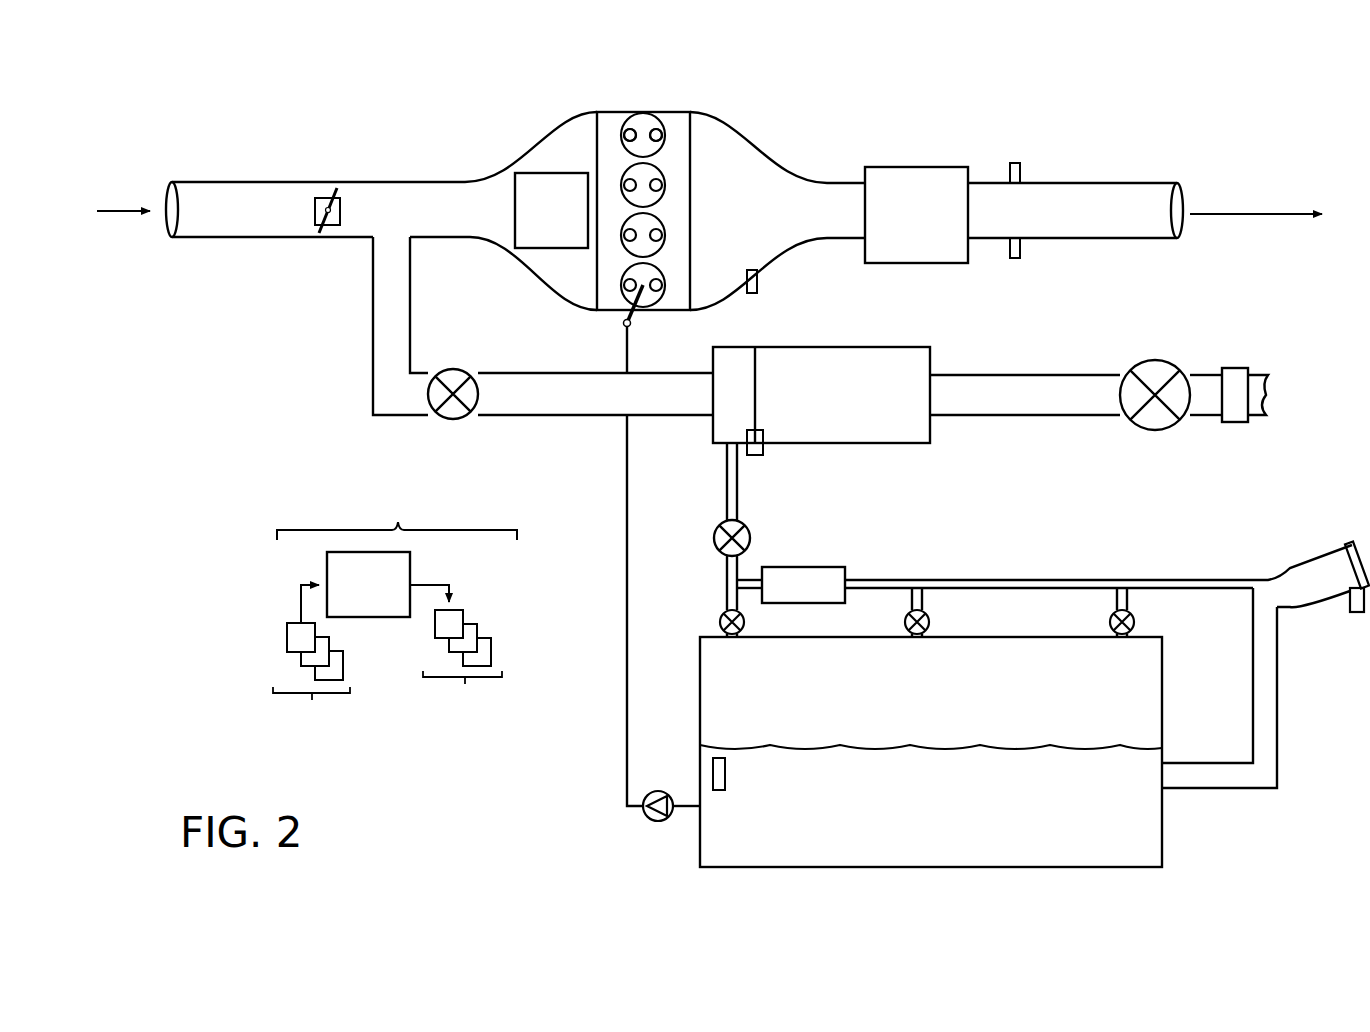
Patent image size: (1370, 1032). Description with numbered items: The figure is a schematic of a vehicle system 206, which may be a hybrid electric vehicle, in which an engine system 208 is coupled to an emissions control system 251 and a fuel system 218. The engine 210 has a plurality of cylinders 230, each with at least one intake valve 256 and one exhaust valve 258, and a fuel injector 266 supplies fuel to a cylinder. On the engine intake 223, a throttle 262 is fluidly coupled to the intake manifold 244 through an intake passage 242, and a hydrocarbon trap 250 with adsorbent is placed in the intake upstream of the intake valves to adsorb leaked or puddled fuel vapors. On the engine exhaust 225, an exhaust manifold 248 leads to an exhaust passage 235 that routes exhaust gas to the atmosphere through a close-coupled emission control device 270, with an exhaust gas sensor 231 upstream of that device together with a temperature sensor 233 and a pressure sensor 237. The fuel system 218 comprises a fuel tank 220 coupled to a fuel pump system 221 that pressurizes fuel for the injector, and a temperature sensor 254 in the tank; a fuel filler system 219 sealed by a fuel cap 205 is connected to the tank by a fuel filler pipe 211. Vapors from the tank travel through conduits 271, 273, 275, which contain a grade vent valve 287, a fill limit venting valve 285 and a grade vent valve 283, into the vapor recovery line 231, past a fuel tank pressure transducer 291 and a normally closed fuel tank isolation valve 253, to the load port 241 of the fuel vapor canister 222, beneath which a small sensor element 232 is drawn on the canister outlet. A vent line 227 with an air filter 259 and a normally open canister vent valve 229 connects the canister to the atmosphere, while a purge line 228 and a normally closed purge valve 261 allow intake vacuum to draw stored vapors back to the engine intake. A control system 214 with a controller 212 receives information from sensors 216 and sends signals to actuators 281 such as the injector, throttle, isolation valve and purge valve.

The fuel cap 205 is at (1366, 543).
The vehicle system 206 is at (185, 112).
The engine system 208 is at (983, 111).
The engine 210 is at (690, 192).
The fuel filler pipe 211 is at (1279, 690).
The controller 212 is at (368, 584).
The control system 214 is at (397, 510).
The sensors 216 is at (311, 662).
The fuel system 218 is at (1212, 828).
The fuel filler system 219 is at (1334, 538).
The fuel tank 220 is at (1162, 735).
The fuel pump system 221 is at (655, 794).
The fuel vapor canister 222 is at (932, 368).
The engine intake 223 is at (525, 137).
The engine exhaust 225 is at (858, 120).
The vent line 227 is at (1062, 404).
The purge line 228 is at (574, 404).
The canister vent valve 229 is at (1155, 360).
The cylinders 230 is at (667, 132).
The vapor recovery line 231 is at (757, 274).
The canister temperature sensor 232 is at (755, 457).
The temperature sensor 233 is at (1010, 252).
The exhaust passage 235 is at (1131, 183).
The pressure sensor 237 is at (1010, 177).
The load port 241 is at (735, 347).
The intake passage 242 is at (358, 240).
The intake manifold 244 is at (590, 156).
The exhaust manifold 248 is at (779, 222).
The hydrocarbon trap 250 is at (551, 210).
The emissions control system 251 is at (1066, 324).
The fuel tank isolation valve 253 is at (750, 536).
The temperature sensor 254 is at (712, 770).
The intake valve 256 is at (630, 128).
The exhaust valve 258 is at (656, 128).
The air filter 259 is at (1238, 368).
The purge valve 261 is at (448, 370).
The throttle 262 is at (341, 215).
The fuel injector 266 is at (633, 326).
The emission control device 270 is at (903, 170).
The conduit 271 is at (737, 596).
The conduit 273 is at (908, 608).
The conduit 275 is at (1112, 608).
The actuators 281 is at (458, 653).
The grade vent valve 283 is at (1134, 622).
The fill limit venting valve 285 is at (930, 622).
The grade vent valve 287 is at (720, 618).
The fuel tank pressure transducer 291 is at (800, 567).